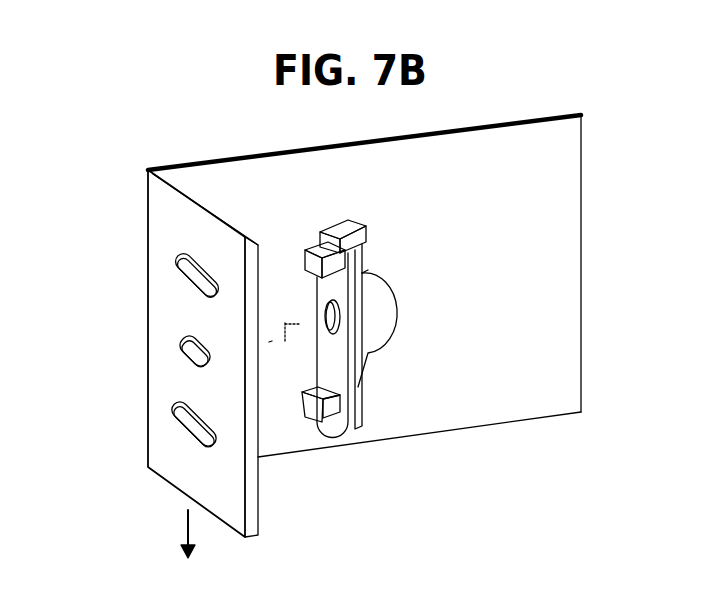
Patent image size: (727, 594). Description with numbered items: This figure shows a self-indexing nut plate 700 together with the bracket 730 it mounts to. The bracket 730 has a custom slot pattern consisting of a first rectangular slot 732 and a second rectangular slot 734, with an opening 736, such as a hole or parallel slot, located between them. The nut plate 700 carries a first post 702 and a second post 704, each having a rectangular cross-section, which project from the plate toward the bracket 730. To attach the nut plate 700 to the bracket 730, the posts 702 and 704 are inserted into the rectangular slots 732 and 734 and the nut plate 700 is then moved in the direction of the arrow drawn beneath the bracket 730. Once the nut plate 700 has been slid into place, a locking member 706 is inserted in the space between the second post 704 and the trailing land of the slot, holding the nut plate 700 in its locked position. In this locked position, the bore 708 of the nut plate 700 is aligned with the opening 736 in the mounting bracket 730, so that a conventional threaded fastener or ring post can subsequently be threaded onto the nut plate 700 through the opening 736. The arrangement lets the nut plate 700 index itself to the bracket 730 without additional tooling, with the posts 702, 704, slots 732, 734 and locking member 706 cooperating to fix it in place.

The nut plate 700 is at (356, 305).
The first post 702 is at (309, 390).
The second post 704 is at (311, 241).
The locking member 706 is at (335, 228).
The bore 708 is at (328, 316).
The bracket 730 is at (183, 163).
The first rectangular slot 732 is at (192, 428).
The second rectangular slot 734 is at (190, 278).
The opening 736 is at (196, 352).